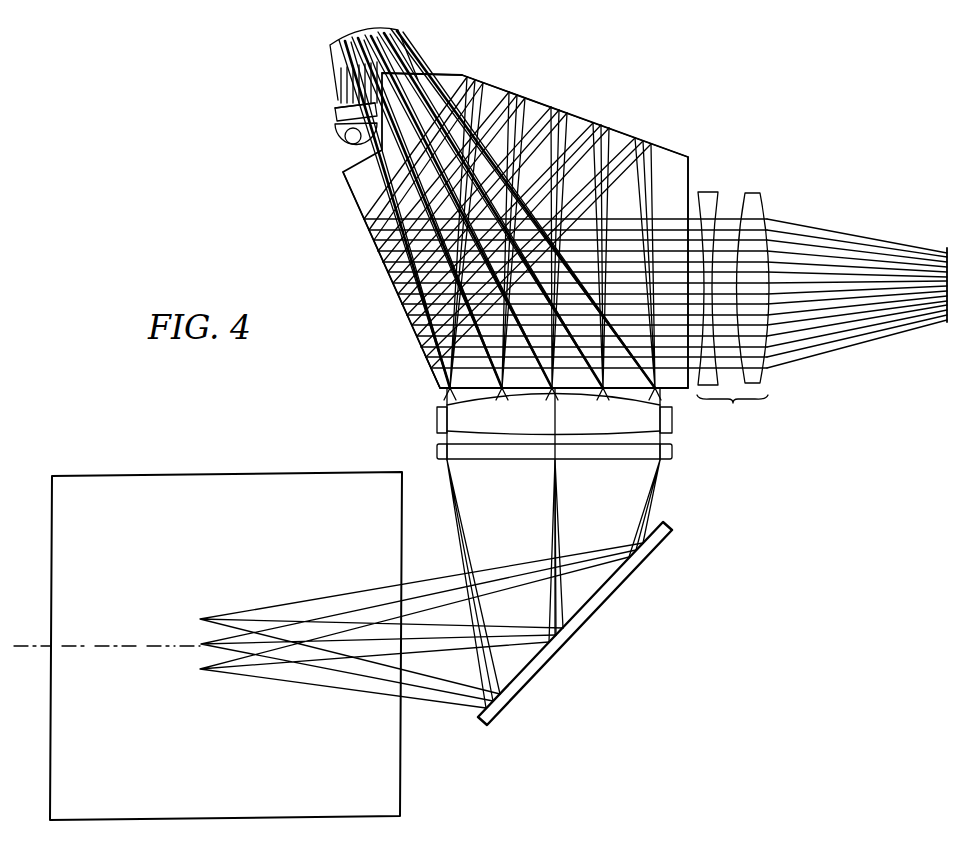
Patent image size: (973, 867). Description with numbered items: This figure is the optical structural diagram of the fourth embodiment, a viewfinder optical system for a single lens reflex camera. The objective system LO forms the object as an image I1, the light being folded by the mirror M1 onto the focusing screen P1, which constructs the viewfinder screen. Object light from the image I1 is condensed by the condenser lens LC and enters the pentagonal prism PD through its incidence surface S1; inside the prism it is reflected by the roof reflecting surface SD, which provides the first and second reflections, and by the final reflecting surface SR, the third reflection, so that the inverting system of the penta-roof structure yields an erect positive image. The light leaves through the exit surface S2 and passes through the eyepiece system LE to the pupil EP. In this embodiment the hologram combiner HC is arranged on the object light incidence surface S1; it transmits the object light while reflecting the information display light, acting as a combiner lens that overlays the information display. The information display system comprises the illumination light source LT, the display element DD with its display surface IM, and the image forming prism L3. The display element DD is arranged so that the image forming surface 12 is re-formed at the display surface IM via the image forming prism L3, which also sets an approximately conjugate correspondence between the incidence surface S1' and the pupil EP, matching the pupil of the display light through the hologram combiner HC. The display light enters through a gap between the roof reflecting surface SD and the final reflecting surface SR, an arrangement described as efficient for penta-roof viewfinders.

The image forming surface 12 is at (380, 296).
The incidence surface S1' is at (436, 55).
The roof reflecting surface SD is at (573, 114).
The pentagonal prism PD is at (665, 149).
The exit surface S2 is at (694, 180).
The final reflecting surface SR is at (366, 227).
The hologram combiner HC is at (437, 392).
The incidence surface S1 is at (571, 411).
The image forming prism L3 is at (398, 44).
The display surface IM is at (338, 106).
The display element DD is at (335, 114).
The illumination light source LT is at (338, 134).
The eyepiece system LE is at (733, 311).
The pupil EP is at (946, 251).
The condenser lens LC is at (437, 428).
The focusing screen P1 is at (672, 452).
The image I1 is at (447, 462).
The mirror M1 is at (667, 524).
The objective system LO is at (228, 473).